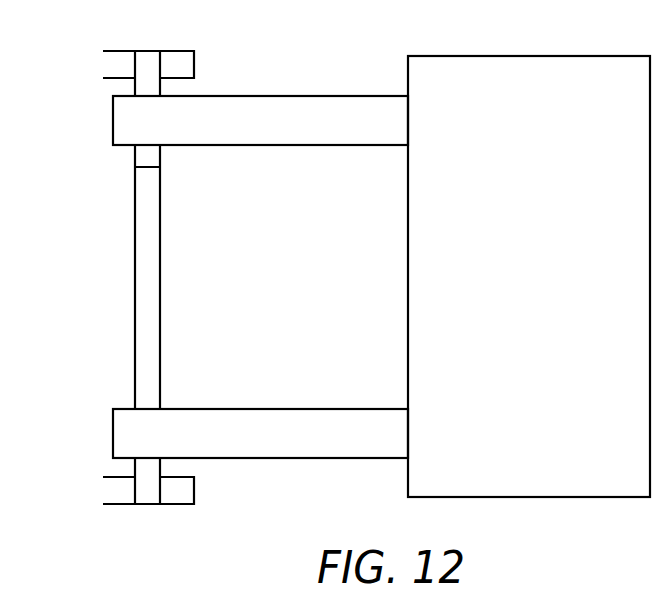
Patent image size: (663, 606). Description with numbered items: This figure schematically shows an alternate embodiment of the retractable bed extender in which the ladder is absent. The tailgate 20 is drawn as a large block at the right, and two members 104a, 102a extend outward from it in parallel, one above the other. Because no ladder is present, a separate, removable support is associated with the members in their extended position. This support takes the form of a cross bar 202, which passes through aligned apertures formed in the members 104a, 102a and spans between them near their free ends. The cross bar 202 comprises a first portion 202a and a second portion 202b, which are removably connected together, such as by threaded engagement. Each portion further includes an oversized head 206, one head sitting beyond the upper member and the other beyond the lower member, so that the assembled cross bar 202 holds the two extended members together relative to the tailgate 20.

The tailgate 20 is at (553, 75).
The member 104a is at (268, 117).
The member 102a is at (268, 427).
The cross bar 202 is at (164, 295).
The first portion 202a is at (140, 58).
The second portion 202b is at (146, 266).
The oversized head 206 is at (122, 495).